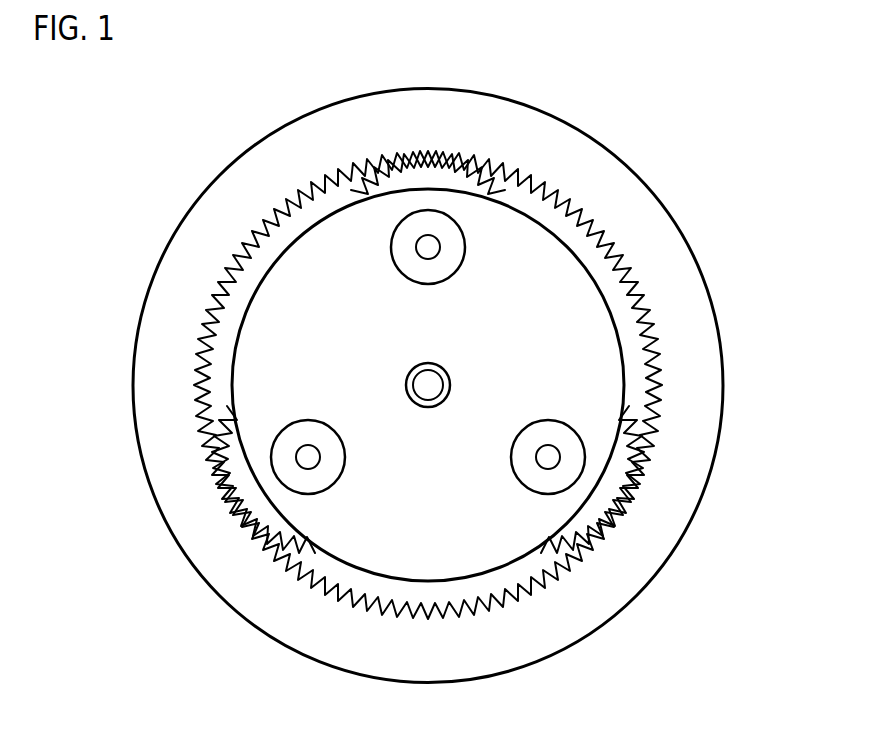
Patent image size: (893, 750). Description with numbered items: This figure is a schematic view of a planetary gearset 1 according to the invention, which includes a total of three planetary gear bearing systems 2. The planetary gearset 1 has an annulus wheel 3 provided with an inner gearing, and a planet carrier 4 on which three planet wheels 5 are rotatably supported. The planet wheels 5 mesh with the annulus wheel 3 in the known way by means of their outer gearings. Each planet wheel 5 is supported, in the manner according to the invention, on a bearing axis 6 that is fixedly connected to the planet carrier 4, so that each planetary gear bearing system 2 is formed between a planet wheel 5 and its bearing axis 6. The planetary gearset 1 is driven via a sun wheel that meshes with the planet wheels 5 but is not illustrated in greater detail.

The planetary gearset 1 is at (690, 160).
The planetary gear bearing system 2 is at (482, 250).
The annulus wheel 3 is at (693, 308).
The planet carrier 4 is at (603, 390).
The planet wheel 5 is at (457, 181).
The bearing axis 6 is at (407, 233).